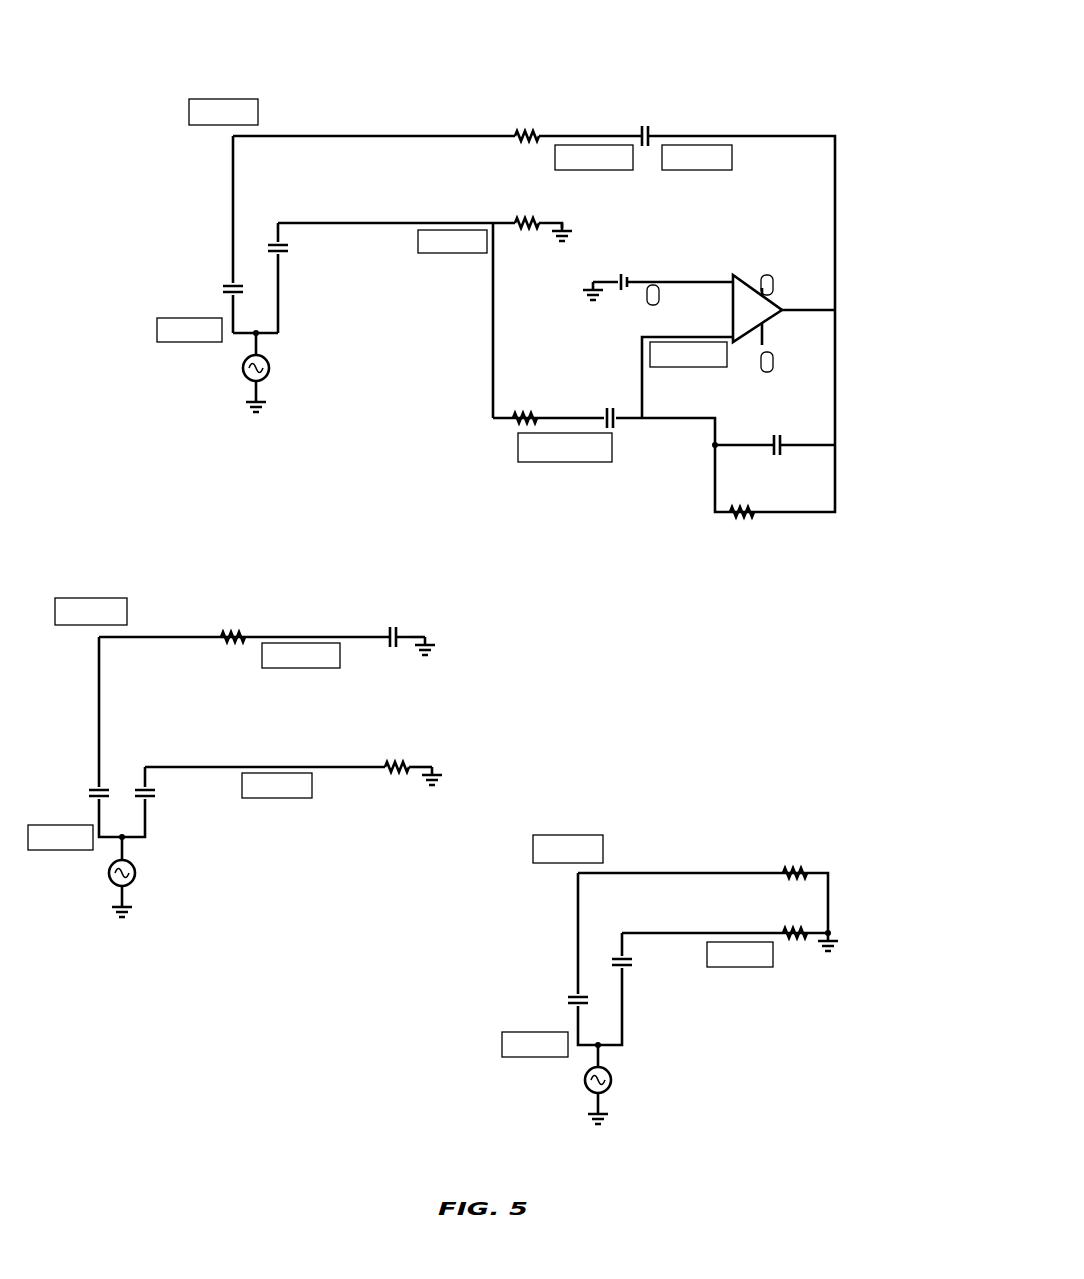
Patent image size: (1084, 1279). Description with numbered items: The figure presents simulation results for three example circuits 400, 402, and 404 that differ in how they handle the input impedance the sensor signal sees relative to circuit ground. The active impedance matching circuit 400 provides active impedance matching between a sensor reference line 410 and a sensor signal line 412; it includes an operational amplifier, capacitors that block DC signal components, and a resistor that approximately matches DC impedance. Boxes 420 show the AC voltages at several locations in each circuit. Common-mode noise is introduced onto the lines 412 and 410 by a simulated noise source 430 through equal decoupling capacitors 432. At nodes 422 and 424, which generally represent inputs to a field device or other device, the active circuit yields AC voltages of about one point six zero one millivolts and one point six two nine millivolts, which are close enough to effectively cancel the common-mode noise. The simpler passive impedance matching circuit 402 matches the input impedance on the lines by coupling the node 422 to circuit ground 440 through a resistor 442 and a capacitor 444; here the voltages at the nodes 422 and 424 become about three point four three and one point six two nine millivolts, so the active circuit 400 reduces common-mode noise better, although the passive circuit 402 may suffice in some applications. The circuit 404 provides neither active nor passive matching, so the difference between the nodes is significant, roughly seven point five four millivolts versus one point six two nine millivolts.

The active impedance matching circuit 400 is at (439, 64).
The passive impedance matching circuit 402 is at (158, 557).
The circuit 404 is at (635, 792).
The sensor reference line 410 is at (352, 225).
The sensor signal line 412 is at (355, 136).
The boxes 420 is at (430, 256).
The node 422 is at (498, 138).
The node 424 is at (497, 323).
The simulated noise source 430 is at (268, 362).
The decoupling capacitors 432 is at (222, 282).
The circuit ground 440 is at (434, 647).
The resistor 442 is at (230, 648).
The capacitor 444 is at (388, 631).